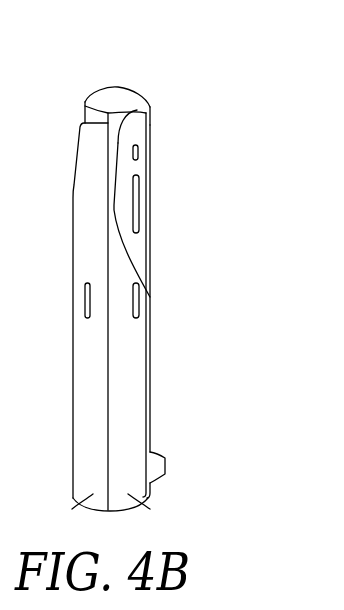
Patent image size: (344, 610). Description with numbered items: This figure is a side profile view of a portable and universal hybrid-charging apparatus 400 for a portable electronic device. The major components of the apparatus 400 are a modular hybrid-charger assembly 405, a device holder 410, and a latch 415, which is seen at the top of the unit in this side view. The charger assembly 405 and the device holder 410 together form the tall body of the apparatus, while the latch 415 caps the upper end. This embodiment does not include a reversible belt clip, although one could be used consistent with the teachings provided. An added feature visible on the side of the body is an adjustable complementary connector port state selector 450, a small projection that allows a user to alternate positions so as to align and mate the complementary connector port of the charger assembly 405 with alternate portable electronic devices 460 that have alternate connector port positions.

The apparatus 400 is at (243, 73).
The modular hybrid-charger assembly 405 is at (102, 327).
The device holder 410 is at (146, 327).
The latch 415 is at (118, 88).
The adjustable complementary connector port state selector 450 is at (168, 466).
The alternate portable electronic devices 460 is at (152, 188).